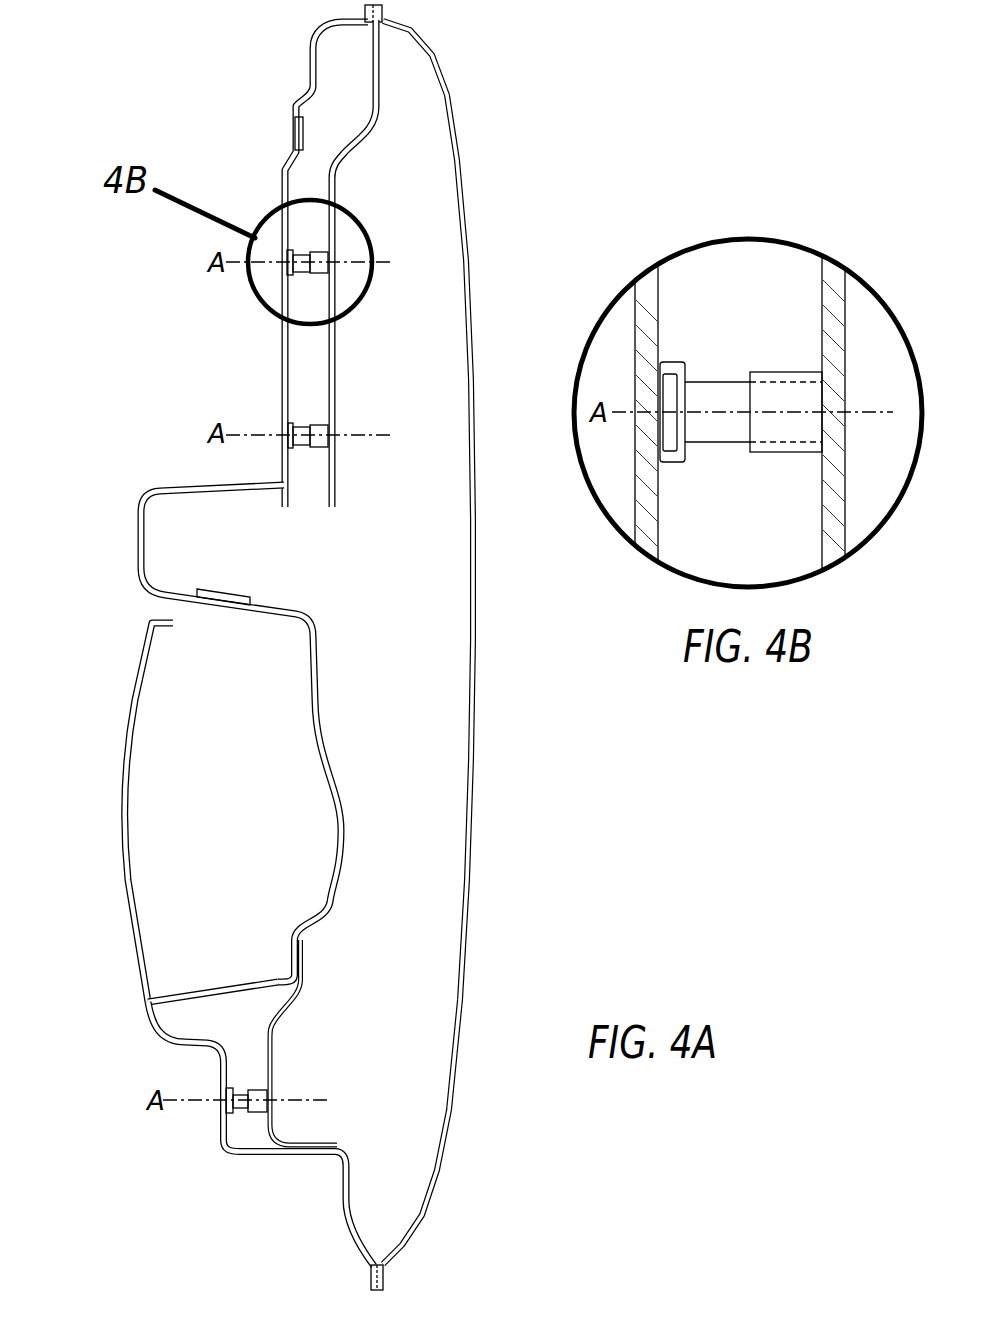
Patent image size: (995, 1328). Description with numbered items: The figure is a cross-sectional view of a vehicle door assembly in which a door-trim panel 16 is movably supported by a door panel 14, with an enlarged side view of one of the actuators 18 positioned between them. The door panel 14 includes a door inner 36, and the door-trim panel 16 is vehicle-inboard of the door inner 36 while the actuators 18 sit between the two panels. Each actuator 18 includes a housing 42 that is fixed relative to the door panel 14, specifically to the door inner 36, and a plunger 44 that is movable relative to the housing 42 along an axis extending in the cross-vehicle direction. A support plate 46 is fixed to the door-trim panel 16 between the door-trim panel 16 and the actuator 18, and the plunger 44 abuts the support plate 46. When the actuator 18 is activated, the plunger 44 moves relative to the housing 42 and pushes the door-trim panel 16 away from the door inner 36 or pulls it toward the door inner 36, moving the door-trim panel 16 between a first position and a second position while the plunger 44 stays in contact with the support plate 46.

In FIG. 4A, the door panel 14 is at (480, 246).
In FIG. 4A, the door-trim panel 16 is at (281, 190).
In FIG. 4B, the door-trim panel 16 is at (646, 413).
In FIG. 4A, the actuator 18 is at (302, 232).
In FIG. 4B, the actuator 18 is at (757, 333).
In FIG. 4A, the door inner 36 is at (478, 292).
In FIG. 4B, the door inner 36 is at (846, 453).
In FIG. 4A, the housing 42 is at (320, 250).
In FIG. 4B, the housing 42 is at (778, 453).
In FIG. 4A, the plunger 44 is at (305, 268).
In FIG. 4B, the plunger 44 is at (713, 411).
In FIG. 4A, the support plate 46 is at (289, 278).
In FIG. 4B, the support plate 46 is at (676, 463).